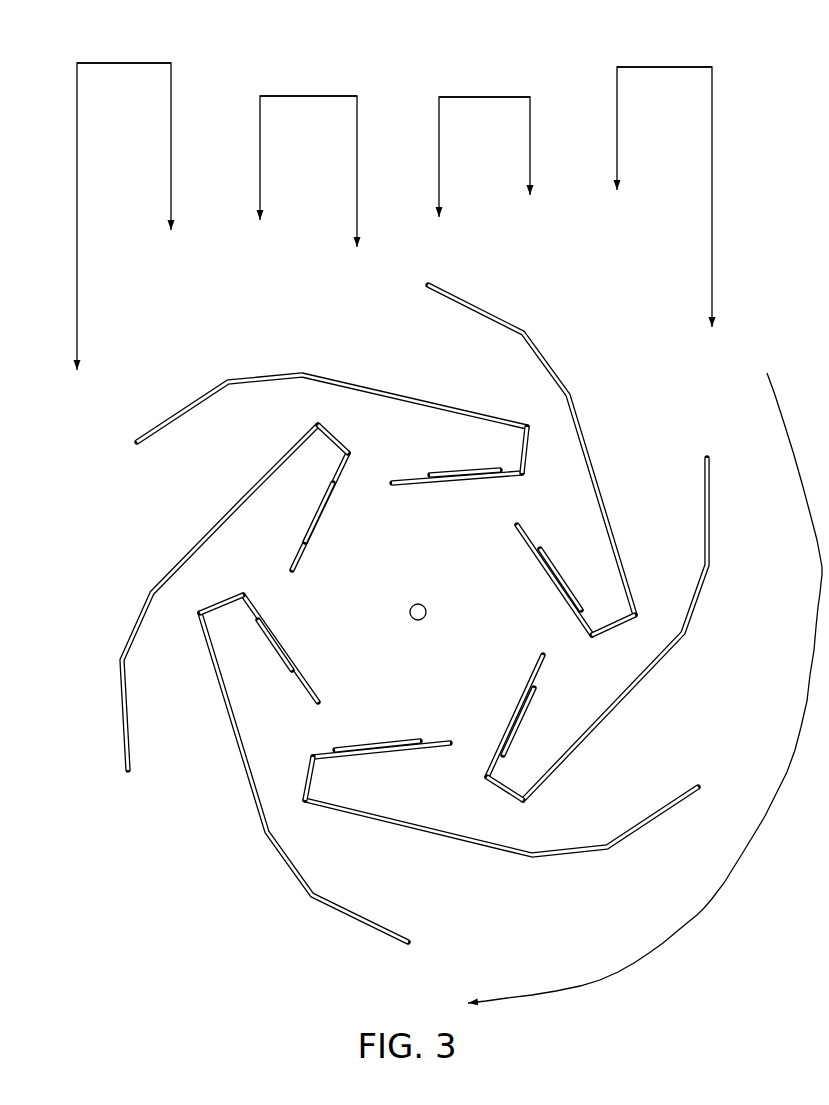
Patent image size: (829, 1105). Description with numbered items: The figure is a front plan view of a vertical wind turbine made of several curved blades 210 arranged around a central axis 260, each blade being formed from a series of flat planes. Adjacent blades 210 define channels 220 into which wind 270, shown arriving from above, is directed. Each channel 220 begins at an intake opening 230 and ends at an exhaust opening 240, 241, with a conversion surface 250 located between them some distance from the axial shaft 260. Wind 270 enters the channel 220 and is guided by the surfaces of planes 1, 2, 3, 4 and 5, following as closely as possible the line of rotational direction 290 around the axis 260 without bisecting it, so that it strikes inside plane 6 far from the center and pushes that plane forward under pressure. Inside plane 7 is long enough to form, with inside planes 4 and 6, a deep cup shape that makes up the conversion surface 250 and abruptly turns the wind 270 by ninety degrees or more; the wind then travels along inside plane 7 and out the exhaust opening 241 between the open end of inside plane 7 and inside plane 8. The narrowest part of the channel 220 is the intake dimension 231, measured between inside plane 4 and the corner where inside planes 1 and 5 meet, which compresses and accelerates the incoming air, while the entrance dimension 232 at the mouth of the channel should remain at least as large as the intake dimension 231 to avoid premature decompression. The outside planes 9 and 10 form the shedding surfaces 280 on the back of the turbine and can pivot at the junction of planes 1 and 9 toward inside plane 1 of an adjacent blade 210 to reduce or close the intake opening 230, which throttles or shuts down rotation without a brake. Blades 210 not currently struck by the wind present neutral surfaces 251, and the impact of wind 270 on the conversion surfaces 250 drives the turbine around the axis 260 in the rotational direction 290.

The blade 210 is at (557, 903).
The channel 220 is at (410, 377).
The intake opening 230 is at (577, 432).
The intake dimension 231 is at (515, 845).
The entrance dimension 232 is at (698, 787).
The exhaust opening 240 is at (537, 537).
The exhaust opening 241 is at (348, 465).
The conversion surface 250 is at (605, 622).
The neutral surface 251 is at (255, 382).
The axis 260 is at (427, 605).
The wind 270 is at (617, 86).
The shedding surface 280 is at (282, 373).
The line of rotational direction 290 is at (687, 923).
The inside plane 1 is at (578, 413).
The inside plane 2 is at (707, 522).
The inside plane 3 is at (688, 610).
The inside plane 4 is at (607, 710).
The inside plane 5 is at (605, 635).
The inside plane 6 is at (520, 790).
The inside plane 7 is at (538, 685).
The inside plane 8 is at (580, 625).
The outside plane 9 is at (293, 370).
The outside plane 10 is at (158, 425).